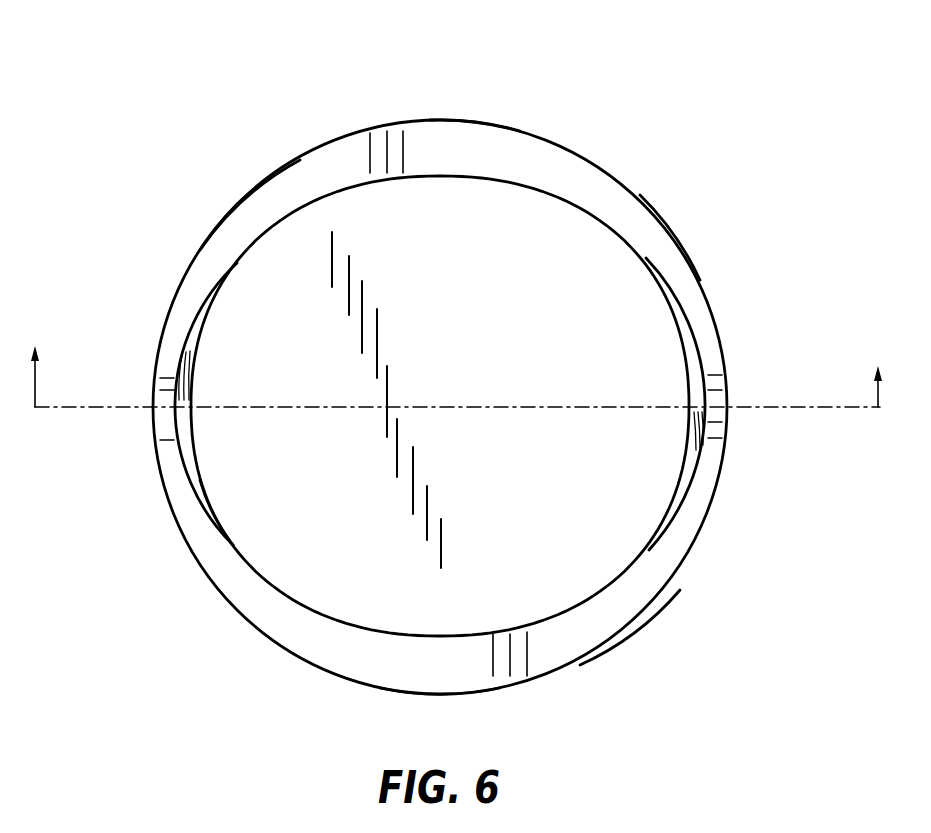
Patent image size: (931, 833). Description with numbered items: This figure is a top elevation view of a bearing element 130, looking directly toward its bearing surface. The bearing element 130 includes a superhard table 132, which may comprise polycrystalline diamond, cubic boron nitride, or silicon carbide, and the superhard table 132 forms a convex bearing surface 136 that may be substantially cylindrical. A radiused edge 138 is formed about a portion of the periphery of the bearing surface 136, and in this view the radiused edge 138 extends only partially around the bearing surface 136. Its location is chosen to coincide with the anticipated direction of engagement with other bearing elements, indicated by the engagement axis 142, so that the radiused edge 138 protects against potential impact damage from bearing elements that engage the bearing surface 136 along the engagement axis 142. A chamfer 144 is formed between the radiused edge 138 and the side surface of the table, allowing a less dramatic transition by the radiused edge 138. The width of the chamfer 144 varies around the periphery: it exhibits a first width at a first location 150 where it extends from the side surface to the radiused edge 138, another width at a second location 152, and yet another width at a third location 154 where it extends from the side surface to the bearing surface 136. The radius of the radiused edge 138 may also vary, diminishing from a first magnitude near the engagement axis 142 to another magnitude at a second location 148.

The bearing element 130 is at (203, 657).
The superhard table 132 is at (468, 117).
The convex bearing surface 136 is at (480, 298).
The radiused edge 138 is at (200, 325).
The engagement axis 142 is at (740, 407).
The chamfer 144 is at (262, 203).
The second location 148 is at (214, 525).
The first location 150 is at (722, 420).
The second location 152 is at (628, 600).
The third location 154 is at (437, 662).